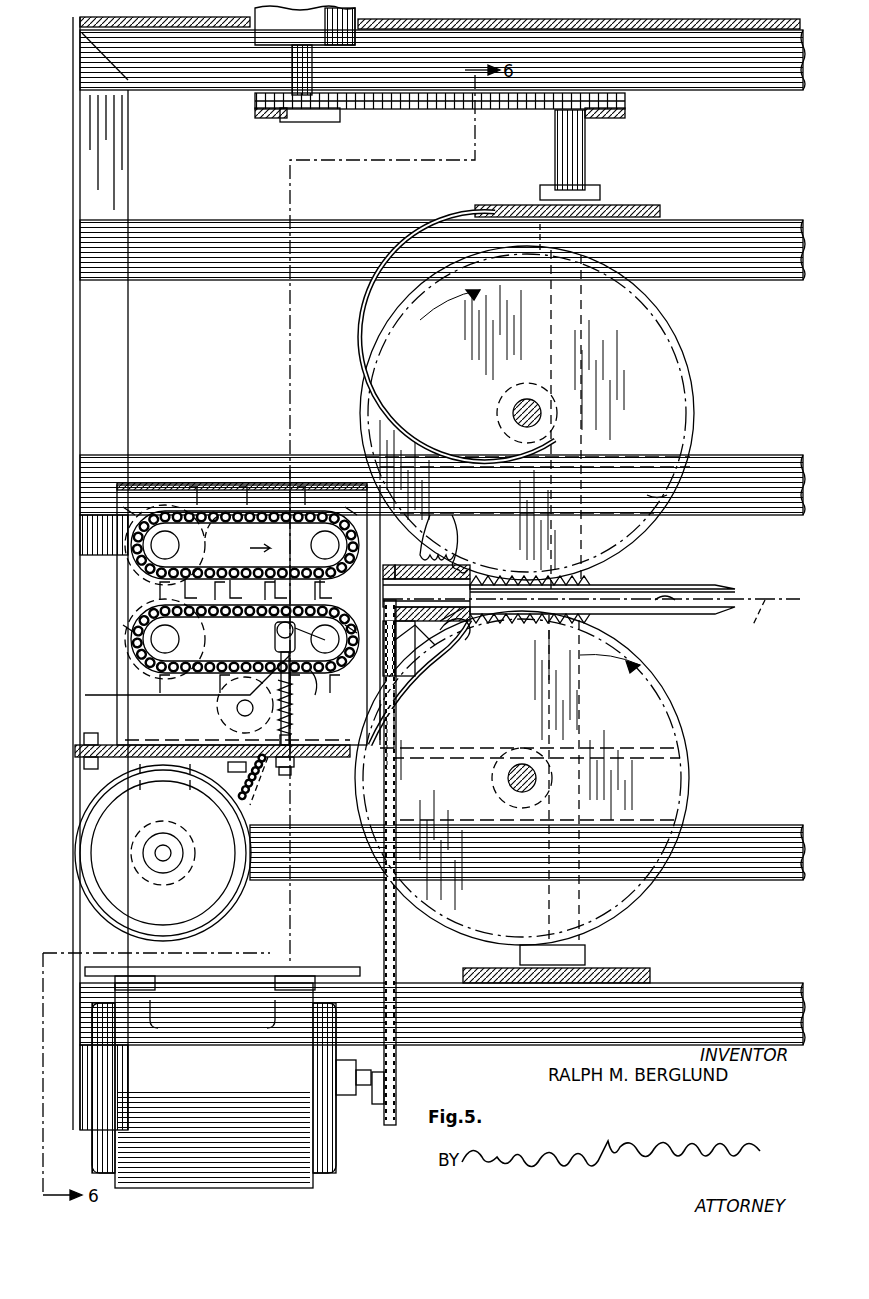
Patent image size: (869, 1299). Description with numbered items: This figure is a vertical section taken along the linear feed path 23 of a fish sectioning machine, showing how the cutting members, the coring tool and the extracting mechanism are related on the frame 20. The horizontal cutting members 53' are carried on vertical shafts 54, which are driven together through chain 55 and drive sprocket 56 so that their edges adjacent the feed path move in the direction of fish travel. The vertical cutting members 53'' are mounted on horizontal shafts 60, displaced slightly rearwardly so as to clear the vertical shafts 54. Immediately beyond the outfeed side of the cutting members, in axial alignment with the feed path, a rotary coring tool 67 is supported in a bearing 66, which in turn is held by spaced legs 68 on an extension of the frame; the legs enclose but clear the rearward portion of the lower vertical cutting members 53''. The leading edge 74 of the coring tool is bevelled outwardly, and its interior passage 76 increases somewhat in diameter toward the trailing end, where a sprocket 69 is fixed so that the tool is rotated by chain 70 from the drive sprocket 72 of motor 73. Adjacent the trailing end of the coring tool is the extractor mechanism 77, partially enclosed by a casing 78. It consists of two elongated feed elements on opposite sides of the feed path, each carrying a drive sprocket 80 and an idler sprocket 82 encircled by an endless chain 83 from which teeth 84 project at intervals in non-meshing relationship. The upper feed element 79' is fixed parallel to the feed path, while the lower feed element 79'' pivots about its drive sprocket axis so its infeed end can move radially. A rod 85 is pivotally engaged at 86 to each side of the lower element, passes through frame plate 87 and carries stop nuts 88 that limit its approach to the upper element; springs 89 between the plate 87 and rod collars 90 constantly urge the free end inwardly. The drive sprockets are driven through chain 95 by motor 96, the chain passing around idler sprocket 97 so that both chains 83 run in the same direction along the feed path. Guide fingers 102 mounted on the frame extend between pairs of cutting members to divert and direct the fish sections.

The frame 20 is at (75, 136).
The linear feed path 23 is at (759, 623).
The horizontal cutting members 53' is at (591, 579).
The vertical cutting members 53'' is at (545, 595).
The vertical shafts 54 is at (585, 168).
The chain 55 is at (438, 110).
The drive sprocket 56 is at (270, 110).
The horizontal shafts 60 is at (527, 402).
The bearing 66 is at (433, 527).
The rotary coring tool 67 is at (456, 533).
The spaced legs 68 is at (448, 640).
The sprocket 69 is at (398, 562).
The chain 70 is at (395, 955).
The drive sprocket 72 is at (397, 1083).
The motor 73 is at (220, 1078).
The leading edge 74 is at (462, 568).
The interior passage 76 is at (475, 580).
The extractor mechanism 77 is at (191, 451).
The casing 78 is at (235, 484).
The upper feed element 79' is at (245, 545).
The lower feed element 79'' is at (245, 639).
The drive sprocket 80 is at (135, 543).
The idler sprocket 82 is at (298, 498).
The endless chains 83 is at (200, 708).
The teeth 84 is at (160, 679).
The rod 85 is at (290, 665).
The pivotal engagement 86 is at (326, 663).
The frame plate 87 is at (88, 775).
The stop nuts 88 is at (292, 768).
The springs 89 is at (302, 758).
The rod collars 90 is at (295, 698).
The chain 95 is at (256, 787).
The motor 96 is at (216, 896).
The idler sprocket 97 is at (264, 784).
The guide fingers 102 is at (435, 400).